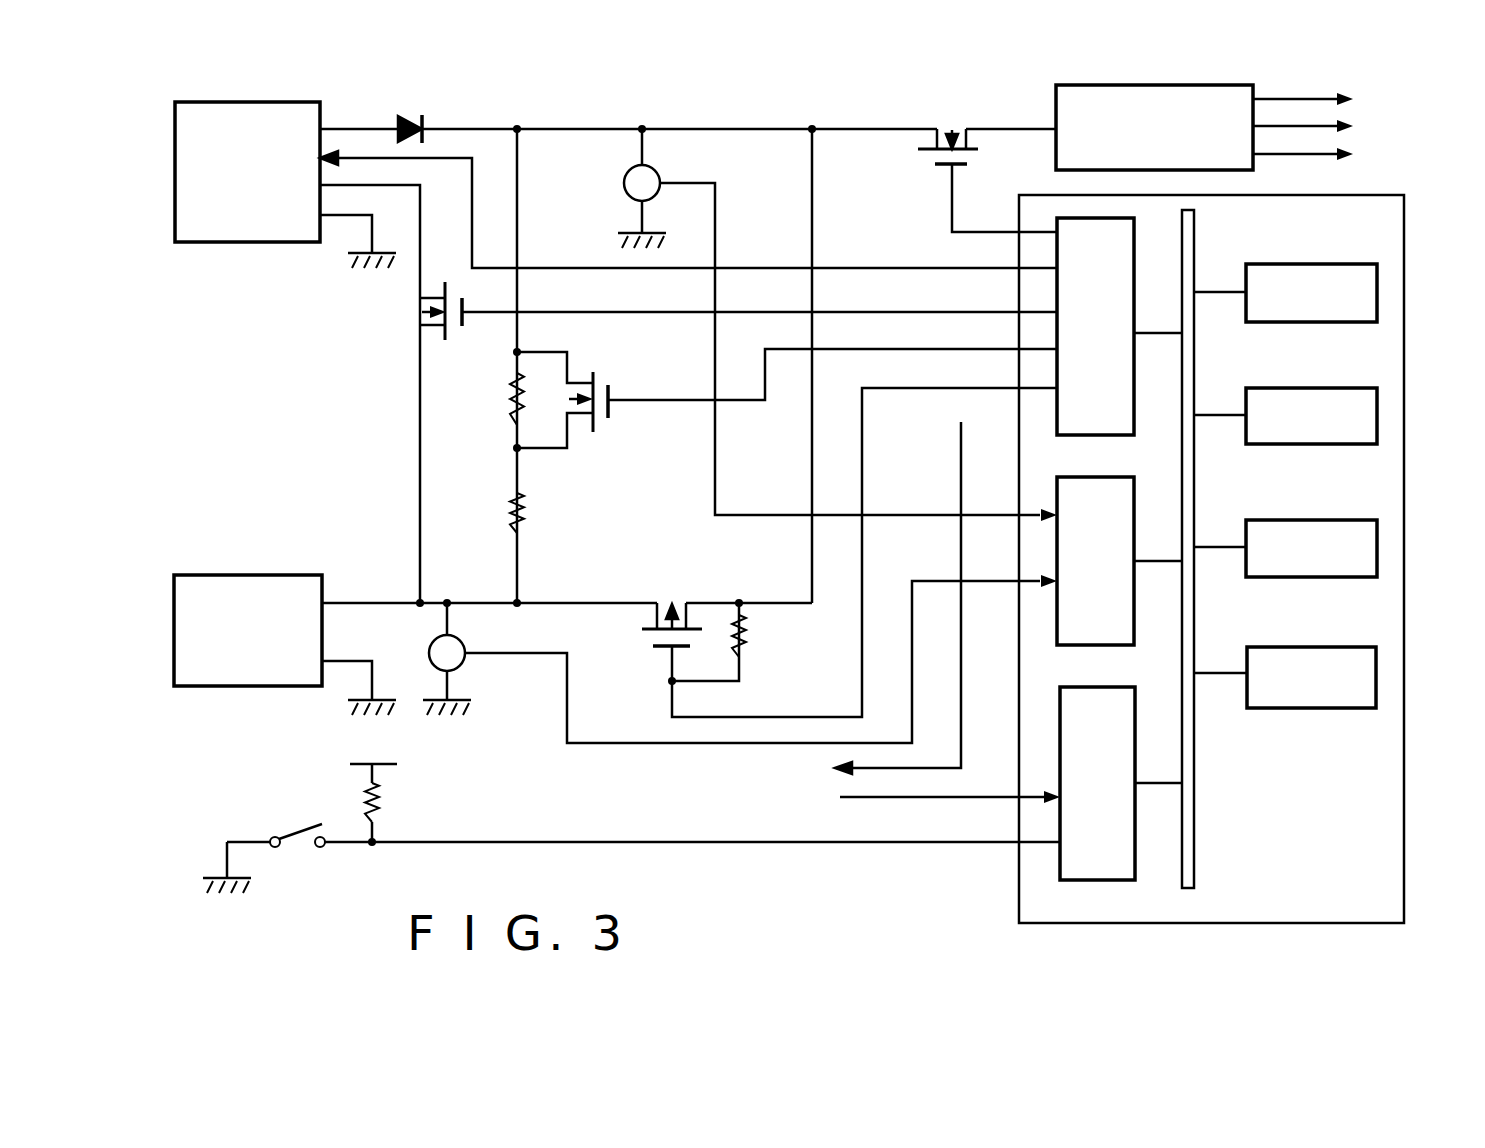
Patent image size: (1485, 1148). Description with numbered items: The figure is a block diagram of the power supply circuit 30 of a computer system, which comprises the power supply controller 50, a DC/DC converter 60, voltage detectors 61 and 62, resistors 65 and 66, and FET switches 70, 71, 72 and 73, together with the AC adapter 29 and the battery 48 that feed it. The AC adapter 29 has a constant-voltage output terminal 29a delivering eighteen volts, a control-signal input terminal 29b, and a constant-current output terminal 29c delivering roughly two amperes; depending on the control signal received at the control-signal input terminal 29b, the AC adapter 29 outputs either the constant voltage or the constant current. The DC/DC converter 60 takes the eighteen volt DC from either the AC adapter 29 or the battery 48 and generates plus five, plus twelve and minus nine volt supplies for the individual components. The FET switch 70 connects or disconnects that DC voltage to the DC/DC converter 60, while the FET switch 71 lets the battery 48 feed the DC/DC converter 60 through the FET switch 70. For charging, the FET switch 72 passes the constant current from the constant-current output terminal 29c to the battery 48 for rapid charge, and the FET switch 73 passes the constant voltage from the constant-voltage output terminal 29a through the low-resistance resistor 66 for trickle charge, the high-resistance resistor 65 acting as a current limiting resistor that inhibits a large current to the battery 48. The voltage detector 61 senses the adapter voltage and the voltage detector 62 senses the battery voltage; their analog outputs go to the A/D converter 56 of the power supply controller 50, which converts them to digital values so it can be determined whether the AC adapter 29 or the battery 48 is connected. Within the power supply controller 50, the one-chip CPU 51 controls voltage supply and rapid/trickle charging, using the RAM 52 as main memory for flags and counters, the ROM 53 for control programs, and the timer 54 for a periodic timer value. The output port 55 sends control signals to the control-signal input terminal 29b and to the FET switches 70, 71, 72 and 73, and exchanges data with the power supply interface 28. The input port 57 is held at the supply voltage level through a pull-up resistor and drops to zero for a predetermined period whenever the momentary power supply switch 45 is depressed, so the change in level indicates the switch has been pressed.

The power supply interface 28 is at (758, 602).
The AC adapter 29 is at (228, 103).
The constant-voltage output terminal 29a is at (328, 126).
The control-signal input terminal 29b is at (330, 156).
The constant-current output terminal 29c is at (322, 188).
The power supply circuit 30 is at (323, 484).
The power supply switch 45 is at (294, 830).
The battery 48 is at (216, 574).
The power supply controller 50 is at (1405, 270).
The CPU 51 is at (1273, 263).
The RAM 52 is at (1273, 388).
The ROM 53 is at (1273, 520).
The timer 54 is at (1300, 708).
The output port 55 is at (1136, 378).
The A/D converter 56 is at (1138, 624).
The input port 57 is at (1140, 868).
The DC/DC converter 60 is at (1122, 86).
The voltage detector 61 is at (624, 180).
The voltage detector 62 is at (468, 662).
The resistor 65 is at (510, 410).
The resistor 66 is at (510, 515).
The FET switch 70 is at (950, 124).
The FET switch 71 is at (664, 602).
The FET switch 72 is at (418, 315).
The FET switch 73 is at (612, 440).